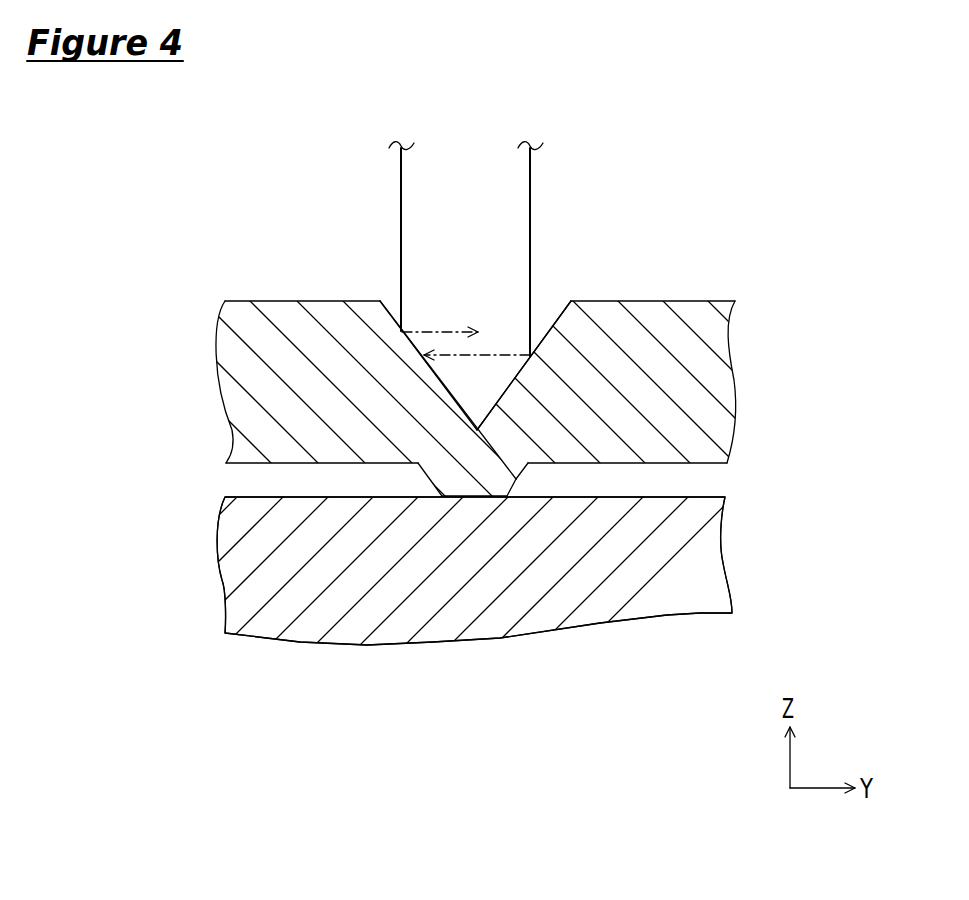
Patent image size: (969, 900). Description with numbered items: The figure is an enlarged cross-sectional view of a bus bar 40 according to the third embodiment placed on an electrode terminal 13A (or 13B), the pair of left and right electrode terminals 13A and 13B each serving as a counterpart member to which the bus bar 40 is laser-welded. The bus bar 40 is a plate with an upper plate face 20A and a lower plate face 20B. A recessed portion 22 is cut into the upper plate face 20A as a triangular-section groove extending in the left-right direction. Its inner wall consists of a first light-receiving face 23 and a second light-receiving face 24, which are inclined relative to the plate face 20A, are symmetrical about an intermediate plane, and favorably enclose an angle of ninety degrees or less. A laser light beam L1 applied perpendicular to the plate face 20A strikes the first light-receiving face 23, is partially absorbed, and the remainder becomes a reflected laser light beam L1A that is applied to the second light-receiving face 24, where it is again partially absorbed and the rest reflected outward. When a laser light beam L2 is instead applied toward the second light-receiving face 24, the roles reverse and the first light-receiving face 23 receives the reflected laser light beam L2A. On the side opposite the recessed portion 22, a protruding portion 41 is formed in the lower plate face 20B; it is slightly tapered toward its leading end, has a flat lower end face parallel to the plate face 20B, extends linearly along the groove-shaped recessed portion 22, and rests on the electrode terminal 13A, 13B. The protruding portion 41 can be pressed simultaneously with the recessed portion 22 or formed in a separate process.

The laser light beam L1 is at (533, 177).
The laser light beam L2 is at (400, 176).
The reflected laser light beam L1A is at (514, 354).
The reflected laser light beam L2A is at (413, 332).
The recessed portion 22 is at (463, 220).
The first light-receiving face 23 is at (556, 318).
The second light-receiving face 24 is at (392, 317).
The upper plate face 20A is at (677, 301).
The lower plate face 20B is at (663, 463).
The bus bar 40 is at (700, 380).
The protruding portion 41 is at (478, 498).
The electrode terminal 13A is at (630, 590).
The electrode terminal 13B is at (544, 576).